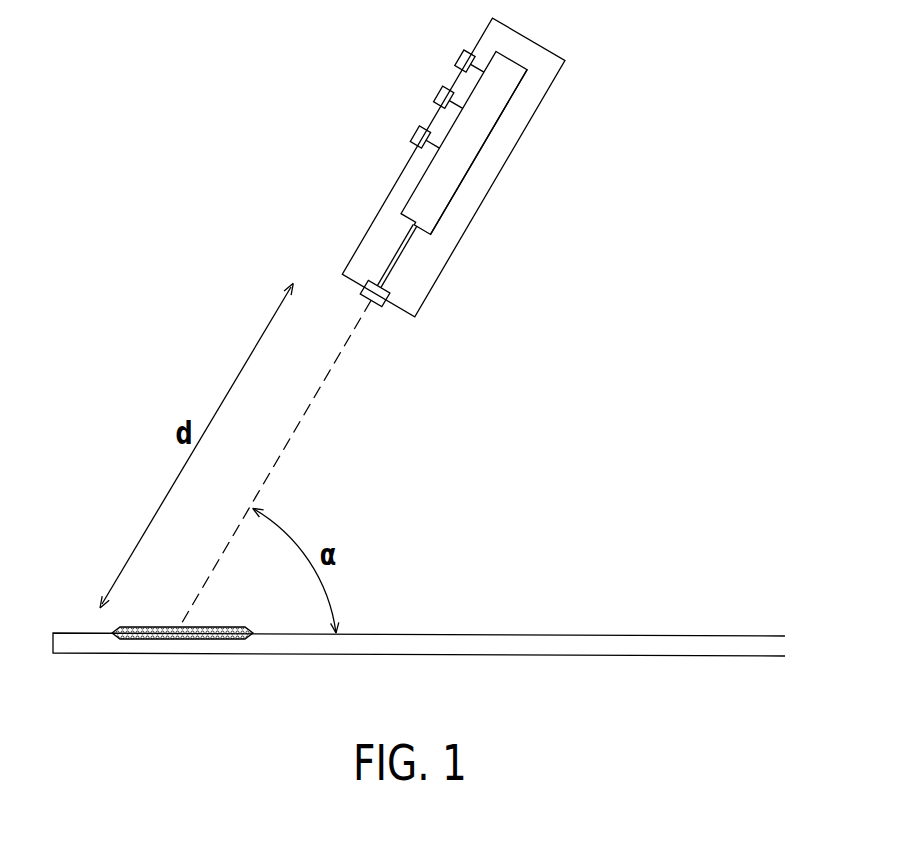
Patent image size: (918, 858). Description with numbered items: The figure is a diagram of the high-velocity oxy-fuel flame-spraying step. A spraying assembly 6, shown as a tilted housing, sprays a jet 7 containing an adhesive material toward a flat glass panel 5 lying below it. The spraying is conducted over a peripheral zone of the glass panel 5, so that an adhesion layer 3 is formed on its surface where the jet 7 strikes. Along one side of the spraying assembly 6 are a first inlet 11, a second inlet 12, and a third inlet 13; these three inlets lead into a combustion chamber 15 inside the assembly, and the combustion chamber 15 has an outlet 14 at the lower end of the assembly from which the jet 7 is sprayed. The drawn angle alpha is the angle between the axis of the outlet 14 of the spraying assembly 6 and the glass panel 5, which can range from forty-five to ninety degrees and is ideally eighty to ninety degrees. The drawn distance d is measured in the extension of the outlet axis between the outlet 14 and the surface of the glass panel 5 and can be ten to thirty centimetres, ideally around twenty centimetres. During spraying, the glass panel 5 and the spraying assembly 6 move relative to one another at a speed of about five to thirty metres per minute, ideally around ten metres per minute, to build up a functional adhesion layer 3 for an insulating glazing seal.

The adhesion layer 3 is at (152, 640).
The glass panel 5 is at (380, 657).
The spraying assembly 6 is at (412, 188).
The jet 7 is at (300, 425).
The first inlet 11 is at (413, 133).
The second inlet 12 is at (438, 95).
The third inlet 13 is at (458, 57).
The outlet 14 is at (383, 308).
The combustion chamber 15 is at (505, 108).